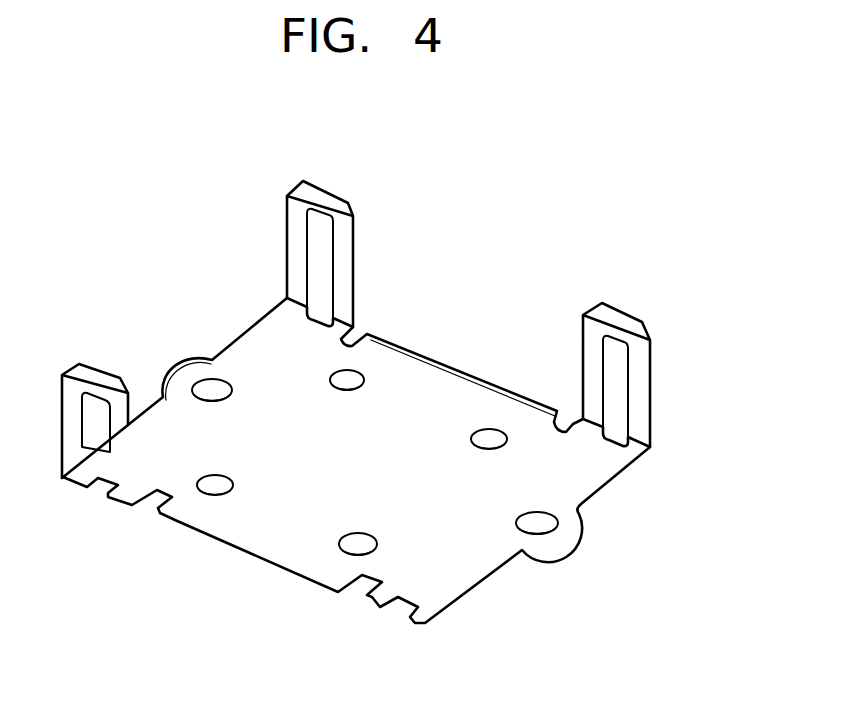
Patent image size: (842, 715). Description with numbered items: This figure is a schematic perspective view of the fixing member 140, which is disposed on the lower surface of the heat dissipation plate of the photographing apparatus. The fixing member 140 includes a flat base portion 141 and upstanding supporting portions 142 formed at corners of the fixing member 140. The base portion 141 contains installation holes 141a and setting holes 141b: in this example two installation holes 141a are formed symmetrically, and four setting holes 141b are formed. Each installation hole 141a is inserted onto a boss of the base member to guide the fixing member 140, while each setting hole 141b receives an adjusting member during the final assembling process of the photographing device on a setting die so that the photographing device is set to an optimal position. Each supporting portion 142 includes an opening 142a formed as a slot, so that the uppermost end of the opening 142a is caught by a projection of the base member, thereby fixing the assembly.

The fixing member 140 is at (657, 218).
The base portion 141 is at (575, 477).
The installation hole 141a is at (167, 385).
The setting hole 141b is at (217, 487).
The supporting portion 142 is at (645, 366).
The opening 142a is at (613, 396).